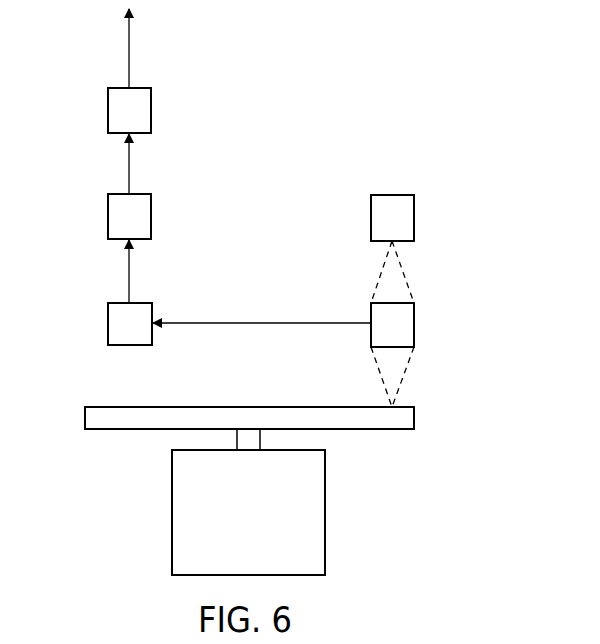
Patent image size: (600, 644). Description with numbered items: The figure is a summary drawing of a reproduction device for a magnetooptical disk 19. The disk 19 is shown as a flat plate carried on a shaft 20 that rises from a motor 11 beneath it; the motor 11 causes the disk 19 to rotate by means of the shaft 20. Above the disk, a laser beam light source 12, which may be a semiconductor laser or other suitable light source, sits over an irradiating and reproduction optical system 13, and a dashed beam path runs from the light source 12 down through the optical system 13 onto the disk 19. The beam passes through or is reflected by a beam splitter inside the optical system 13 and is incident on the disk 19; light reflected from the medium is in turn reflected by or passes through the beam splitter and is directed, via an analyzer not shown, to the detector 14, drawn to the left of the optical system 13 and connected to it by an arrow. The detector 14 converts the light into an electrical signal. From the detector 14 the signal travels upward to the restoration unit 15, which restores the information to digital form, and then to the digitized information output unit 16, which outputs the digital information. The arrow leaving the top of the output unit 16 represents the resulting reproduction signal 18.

The motor 11 is at (325, 507).
The laser beam light source 12 is at (414, 220).
The irradiating and reproduction optical system 13 is at (414, 323).
The detector 14 is at (152, 308).
The restoration unit 15 is at (152, 213).
The digitized information output unit 16 is at (151, 112).
The reproduction signal 18 is at (129, 56).
The magnetooptical disk 19 is at (425, 422).
The shaft 20 is at (237, 438).